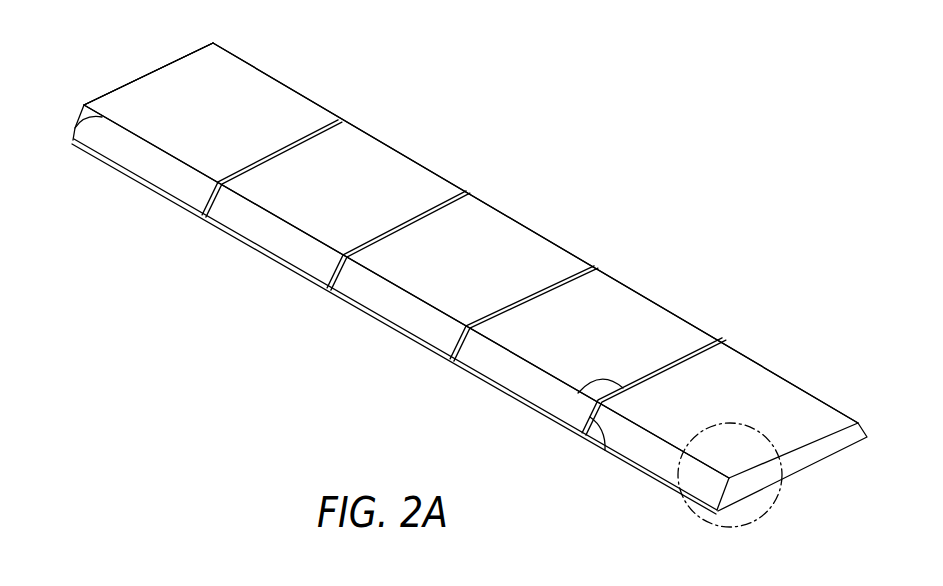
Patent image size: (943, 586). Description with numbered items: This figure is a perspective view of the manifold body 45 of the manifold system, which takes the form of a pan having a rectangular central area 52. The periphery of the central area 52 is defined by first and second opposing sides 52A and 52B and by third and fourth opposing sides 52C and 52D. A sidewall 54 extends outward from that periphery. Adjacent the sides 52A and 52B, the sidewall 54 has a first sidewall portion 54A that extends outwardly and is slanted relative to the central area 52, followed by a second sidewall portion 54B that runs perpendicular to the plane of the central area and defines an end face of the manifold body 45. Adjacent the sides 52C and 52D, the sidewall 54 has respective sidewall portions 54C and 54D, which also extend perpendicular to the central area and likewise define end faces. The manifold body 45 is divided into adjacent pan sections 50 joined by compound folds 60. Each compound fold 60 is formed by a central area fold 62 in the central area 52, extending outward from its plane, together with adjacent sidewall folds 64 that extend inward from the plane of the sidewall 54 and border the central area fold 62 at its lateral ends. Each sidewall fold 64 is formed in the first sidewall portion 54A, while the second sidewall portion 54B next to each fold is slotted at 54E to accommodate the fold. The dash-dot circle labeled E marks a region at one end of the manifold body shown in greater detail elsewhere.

The manifold body 45 is at (333, 65).
The pan section 50 is at (367, 200).
The rectangular central area 52 is at (333, 193).
The first side of central area 52A is at (74, 128).
The second side of central area 52B is at (250, 63).
The third side of central area 52C is at (192, 50).
The fourth side of central area 52D is at (810, 440).
The sidewall 54 is at (273, 228).
The first sidewall portion 54A is at (410, 313).
The second sidewall portion 54B is at (427, 347).
The sidewall portion adjacent third side 54C is at (110, 93).
The sidewall portion adjacent fourth side 54D is at (798, 467).
The slot 54E is at (453, 362).
The compound fold 60 is at (670, 360).
The central area fold 62 is at (578, 393).
The sidewall fold 64 is at (605, 450).
The detail region E is at (693, 513).